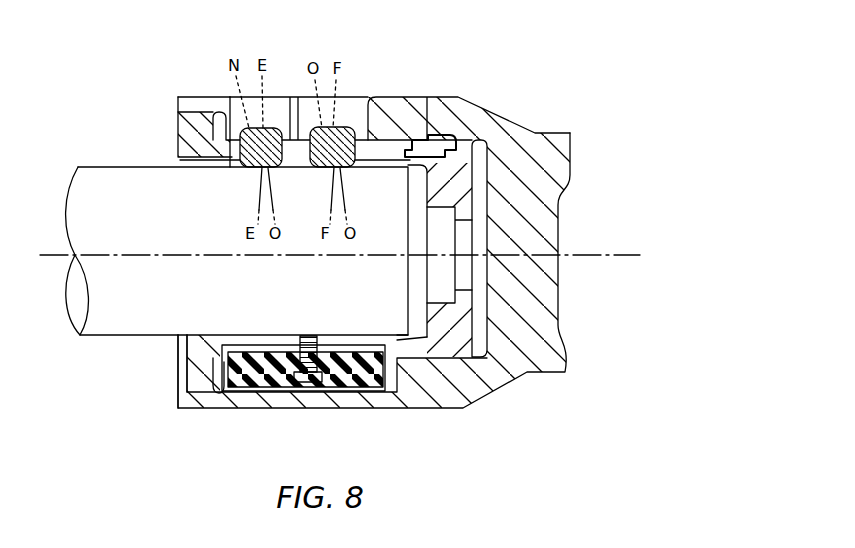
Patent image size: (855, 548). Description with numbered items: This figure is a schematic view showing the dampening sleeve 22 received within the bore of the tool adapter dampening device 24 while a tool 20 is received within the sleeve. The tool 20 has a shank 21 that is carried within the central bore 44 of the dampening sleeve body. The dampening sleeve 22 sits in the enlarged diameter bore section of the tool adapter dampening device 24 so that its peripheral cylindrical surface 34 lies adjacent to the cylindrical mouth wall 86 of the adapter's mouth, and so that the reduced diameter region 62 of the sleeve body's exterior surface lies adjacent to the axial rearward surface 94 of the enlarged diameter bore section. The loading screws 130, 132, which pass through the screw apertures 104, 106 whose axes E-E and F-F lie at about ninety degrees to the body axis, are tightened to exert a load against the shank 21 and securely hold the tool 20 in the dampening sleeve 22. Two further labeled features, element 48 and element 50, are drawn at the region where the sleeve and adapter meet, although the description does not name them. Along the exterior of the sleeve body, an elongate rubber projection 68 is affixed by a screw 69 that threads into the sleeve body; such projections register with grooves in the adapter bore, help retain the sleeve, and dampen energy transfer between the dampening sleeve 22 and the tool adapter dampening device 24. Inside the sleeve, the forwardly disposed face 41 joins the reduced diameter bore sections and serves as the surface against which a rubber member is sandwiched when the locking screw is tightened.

The tool 20 is at (85, 337).
The shank 21 is at (282, 306).
The dampening sleeve 22 is at (178, 360).
The tool adapter dampening device 24 is at (358, 406).
The peripheral cylindrical surface 34 is at (178, 100).
The forwardly disposed face 41 is at (456, 292).
The central bore 44 is at (215, 340).
The seal lip 48 is at (238, 150).
The seal lip 50 is at (352, 157).
The reduced diameter region 62 is at (428, 100).
The projection 68 is at (250, 378).
The screw 69 is at (303, 378).
The cylindrical mouth wall 86 is at (178, 124).
The axial rearward surface 94 is at (458, 145).
The screw aperture 104 is at (282, 130).
The screw aperture 106 is at (368, 97).
The loading screw 130 is at (247, 132).
The loading screw 132 is at (310, 132).